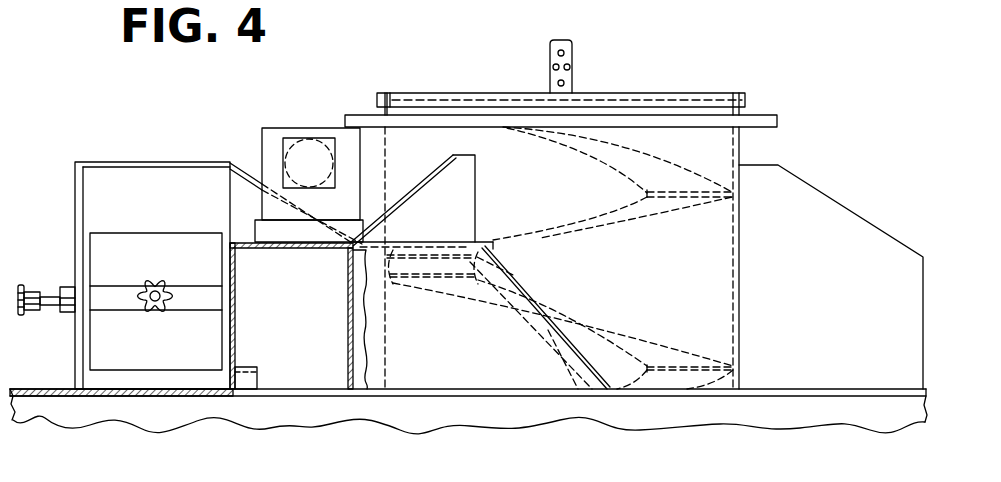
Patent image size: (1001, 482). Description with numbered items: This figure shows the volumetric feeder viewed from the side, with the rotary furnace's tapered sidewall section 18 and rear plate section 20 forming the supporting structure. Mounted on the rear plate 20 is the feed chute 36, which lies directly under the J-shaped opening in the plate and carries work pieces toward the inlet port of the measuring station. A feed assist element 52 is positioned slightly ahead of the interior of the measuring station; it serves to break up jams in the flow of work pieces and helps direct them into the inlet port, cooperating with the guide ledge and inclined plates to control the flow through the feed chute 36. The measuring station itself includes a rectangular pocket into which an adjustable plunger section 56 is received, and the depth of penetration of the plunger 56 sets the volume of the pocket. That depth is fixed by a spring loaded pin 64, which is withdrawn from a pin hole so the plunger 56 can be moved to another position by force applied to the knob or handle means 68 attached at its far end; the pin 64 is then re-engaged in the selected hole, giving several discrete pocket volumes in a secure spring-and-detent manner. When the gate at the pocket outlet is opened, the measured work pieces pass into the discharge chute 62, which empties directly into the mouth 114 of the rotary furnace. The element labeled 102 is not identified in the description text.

The tapered sidewall section 18 is at (438, 421).
The rear plate section 20 is at (469, 441).
The feed chute 36 is at (327, 315).
The feed assist element 52 is at (258, 367).
The adjustable plunger section 56 is at (168, 358).
The discharge chute 62 is at (180, 204).
The spring loaded pin 64 is at (21, 286).
The knob or handle means 68 is at (158, 282).
The motor 102 is at (312, 138).
The mouth of the rotary furnace 114 is at (560, 201).